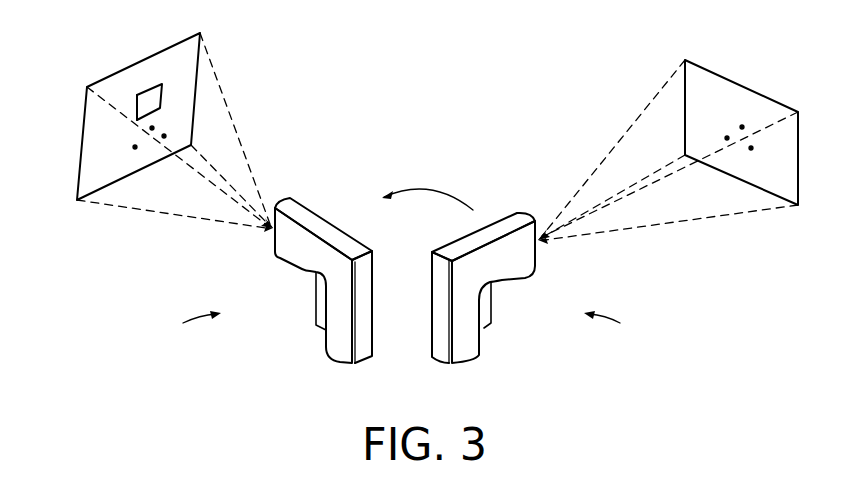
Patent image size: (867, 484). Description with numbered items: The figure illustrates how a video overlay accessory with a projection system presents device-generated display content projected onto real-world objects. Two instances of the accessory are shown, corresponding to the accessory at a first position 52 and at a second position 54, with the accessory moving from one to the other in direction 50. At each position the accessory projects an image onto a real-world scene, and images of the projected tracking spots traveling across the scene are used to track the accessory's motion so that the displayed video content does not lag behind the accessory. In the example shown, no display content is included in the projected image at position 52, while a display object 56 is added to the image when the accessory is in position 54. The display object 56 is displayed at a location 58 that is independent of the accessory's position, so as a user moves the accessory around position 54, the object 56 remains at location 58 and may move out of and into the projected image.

The direction 50 is at (437, 191).
The position 52 is at (615, 322).
The position 54 is at (190, 322).
The display object 56 is at (148, 97).
The location 58 is at (138, 95).